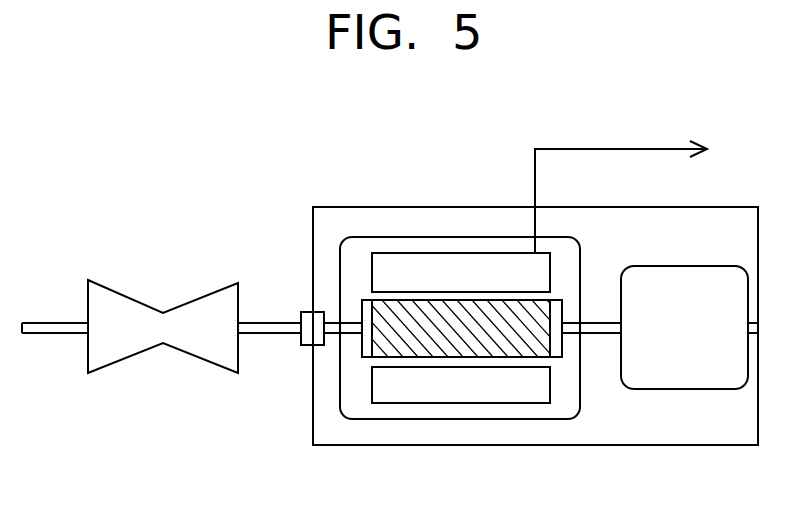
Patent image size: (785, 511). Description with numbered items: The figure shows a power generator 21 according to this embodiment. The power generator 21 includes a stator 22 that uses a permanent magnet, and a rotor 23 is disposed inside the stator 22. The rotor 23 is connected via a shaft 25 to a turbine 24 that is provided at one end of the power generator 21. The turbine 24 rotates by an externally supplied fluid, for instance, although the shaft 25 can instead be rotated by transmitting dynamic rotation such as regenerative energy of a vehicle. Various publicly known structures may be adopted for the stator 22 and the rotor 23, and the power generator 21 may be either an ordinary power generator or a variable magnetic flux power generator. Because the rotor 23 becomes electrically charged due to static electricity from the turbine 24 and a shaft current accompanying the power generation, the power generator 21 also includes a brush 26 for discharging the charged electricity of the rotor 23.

The power generator 21 is at (360, 207).
The stator 22 is at (428, 393).
The rotor 23 is at (475, 348).
The turbine 24 is at (207, 297).
The shaft 25 is at (275, 335).
The brush 26 is at (673, 375).